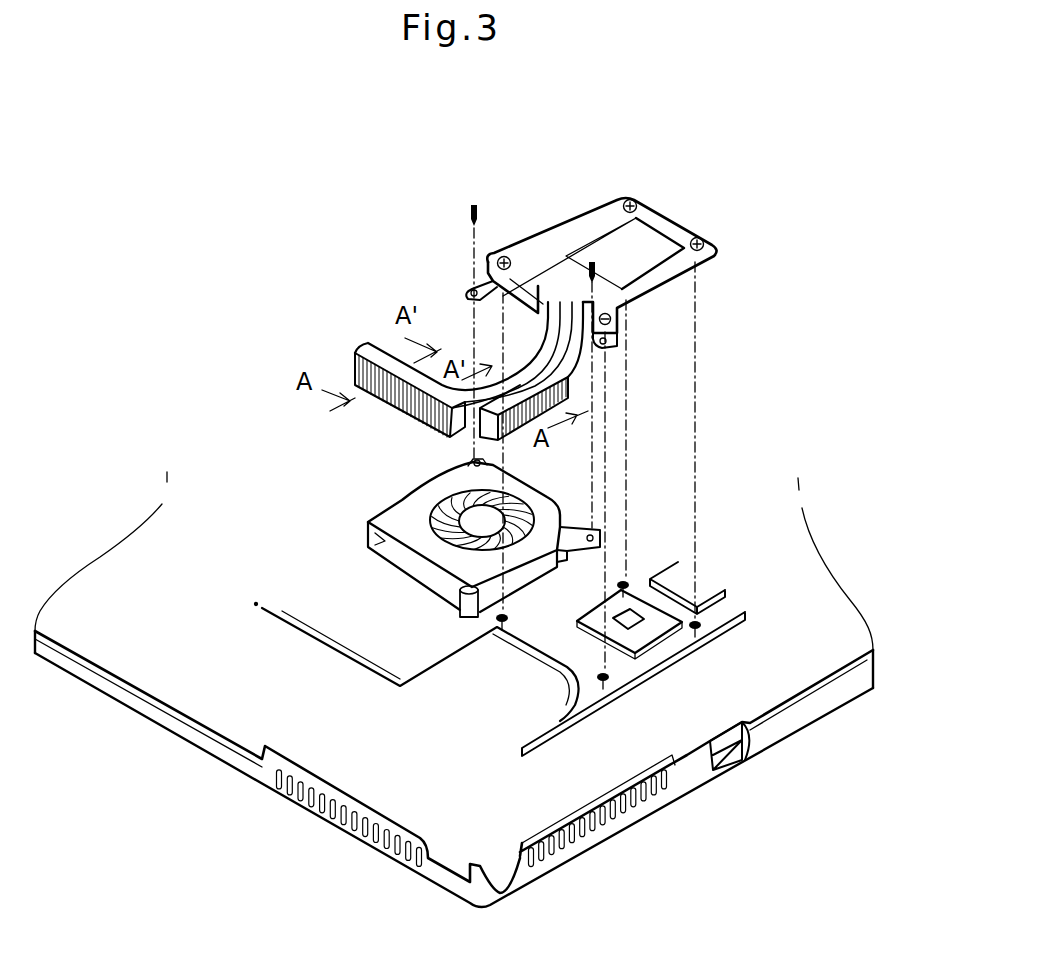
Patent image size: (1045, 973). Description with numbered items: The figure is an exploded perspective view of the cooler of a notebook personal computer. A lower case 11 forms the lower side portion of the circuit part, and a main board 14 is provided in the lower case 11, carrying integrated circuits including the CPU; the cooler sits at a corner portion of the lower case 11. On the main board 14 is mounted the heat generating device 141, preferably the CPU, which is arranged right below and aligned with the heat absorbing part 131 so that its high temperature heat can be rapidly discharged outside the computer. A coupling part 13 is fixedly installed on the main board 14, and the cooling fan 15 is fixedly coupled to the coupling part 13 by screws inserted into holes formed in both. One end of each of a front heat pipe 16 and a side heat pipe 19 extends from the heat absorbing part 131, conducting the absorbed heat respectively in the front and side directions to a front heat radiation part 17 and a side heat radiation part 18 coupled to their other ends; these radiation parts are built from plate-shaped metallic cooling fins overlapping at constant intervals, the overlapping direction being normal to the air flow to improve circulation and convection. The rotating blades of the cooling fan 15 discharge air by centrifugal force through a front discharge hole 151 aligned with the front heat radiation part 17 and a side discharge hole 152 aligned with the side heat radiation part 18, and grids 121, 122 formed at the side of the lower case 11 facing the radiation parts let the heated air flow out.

The lower case 11 is at (787, 725).
The grid 121 is at (357, 830).
The grid 122 is at (610, 830).
The coupling part 13 is at (660, 268).
The heat absorbing part 131 is at (607, 257).
The main board 14 is at (735, 613).
The heat generating device 141 is at (640, 628).
The cooling fan 15 is at (413, 508).
The front discharge hole 151 is at (415, 563).
The side discharge hole 152 is at (515, 575).
The front heat pipe 16 is at (373, 343).
The front heat radiation part 17 is at (372, 406).
The side heat radiation part 18 is at (577, 393).
The side heat pipe 19 is at (605, 343).